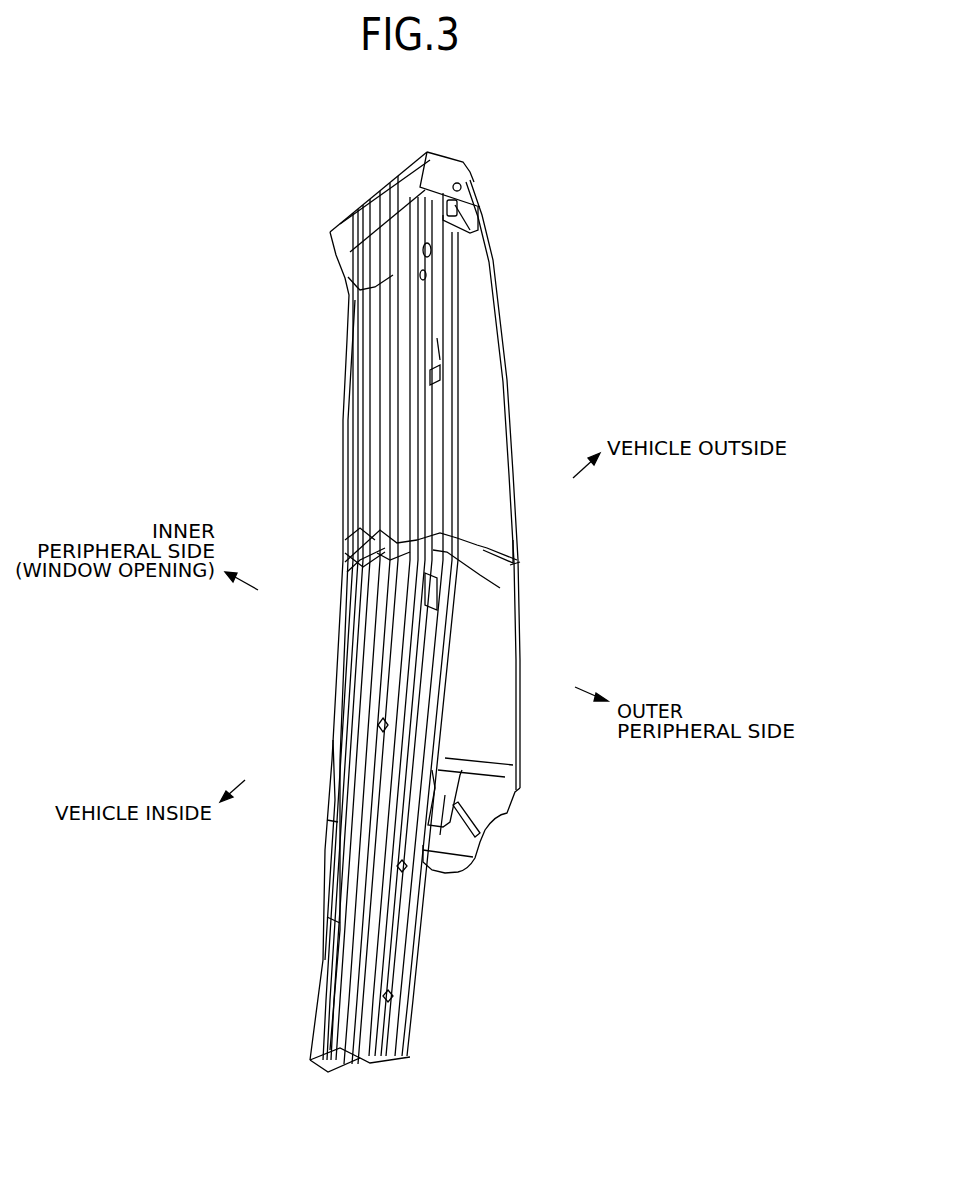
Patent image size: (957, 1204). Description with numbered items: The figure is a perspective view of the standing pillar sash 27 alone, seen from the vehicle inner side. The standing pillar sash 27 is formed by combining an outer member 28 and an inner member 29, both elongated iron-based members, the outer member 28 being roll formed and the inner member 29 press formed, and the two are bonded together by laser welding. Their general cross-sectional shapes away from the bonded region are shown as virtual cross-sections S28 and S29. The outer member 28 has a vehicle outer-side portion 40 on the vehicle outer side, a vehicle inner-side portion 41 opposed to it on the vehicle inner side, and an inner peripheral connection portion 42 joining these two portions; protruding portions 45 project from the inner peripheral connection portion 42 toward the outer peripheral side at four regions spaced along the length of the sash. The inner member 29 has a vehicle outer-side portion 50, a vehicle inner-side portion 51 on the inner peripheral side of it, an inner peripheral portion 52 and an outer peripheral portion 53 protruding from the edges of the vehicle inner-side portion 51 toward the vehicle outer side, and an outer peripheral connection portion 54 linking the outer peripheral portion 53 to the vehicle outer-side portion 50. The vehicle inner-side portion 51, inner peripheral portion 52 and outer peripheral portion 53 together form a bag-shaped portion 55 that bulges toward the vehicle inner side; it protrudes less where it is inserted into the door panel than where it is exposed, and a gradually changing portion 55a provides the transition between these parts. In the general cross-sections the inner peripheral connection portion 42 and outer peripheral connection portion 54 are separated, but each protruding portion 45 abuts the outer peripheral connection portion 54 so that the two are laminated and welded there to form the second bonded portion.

The standing pillar sash 27 is at (495, 158).
The inner member 29 is at (505, 260).
The outer member 28 is at (450, 404).
The protruding portions 45 is at (453, 333).
The virtual cross-section of the outer member S28 is at (446, 513).
The virtual cross-section of the inner member S29 is at (491, 532).
The vehicle outer-side portion 50 is at (515, 541).
The vehicle outer-side portion 40 is at (425, 518).
The inner peripheral connection portion 42 is at (383, 516).
The vehicle inner-side portion 41 is at (413, 550).
The bag-shaped portion 55 is at (350, 528).
The inner peripheral portion 52 is at (352, 528).
The vehicle inner-side portion 51 is at (350, 570).
The outer peripheral portion 53 is at (377, 553).
The outer peripheral connection portion 54 is at (480, 578).
The gradually changing portion 55a is at (330, 878).